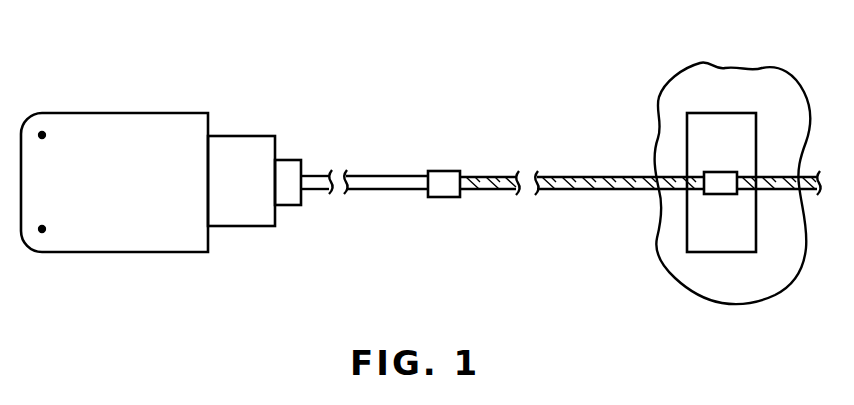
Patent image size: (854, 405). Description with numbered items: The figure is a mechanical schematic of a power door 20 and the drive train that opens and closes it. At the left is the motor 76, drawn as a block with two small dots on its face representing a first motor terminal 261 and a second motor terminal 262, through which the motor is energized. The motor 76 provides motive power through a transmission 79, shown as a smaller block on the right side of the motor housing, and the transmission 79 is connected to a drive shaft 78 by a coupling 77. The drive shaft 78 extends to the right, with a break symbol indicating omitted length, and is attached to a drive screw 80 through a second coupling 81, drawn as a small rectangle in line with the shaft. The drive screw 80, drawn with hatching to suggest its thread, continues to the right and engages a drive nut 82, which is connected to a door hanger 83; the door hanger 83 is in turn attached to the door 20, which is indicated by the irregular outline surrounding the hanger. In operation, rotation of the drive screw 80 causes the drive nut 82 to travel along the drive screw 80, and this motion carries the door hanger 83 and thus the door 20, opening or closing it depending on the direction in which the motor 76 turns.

The power door 20 is at (738, 80).
The motor 76 is at (135, 187).
The coupling 77 is at (290, 198).
The drive shaft 78 is at (314, 178).
The transmission 79 is at (242, 145).
The drive screw 80 is at (574, 178).
The coupling 81 is at (442, 178).
The drive nut 82 is at (714, 187).
The door hanger 83 is at (707, 237).
The first motor terminal 261 is at (42, 135).
The second motor terminal 262 is at (42, 229).